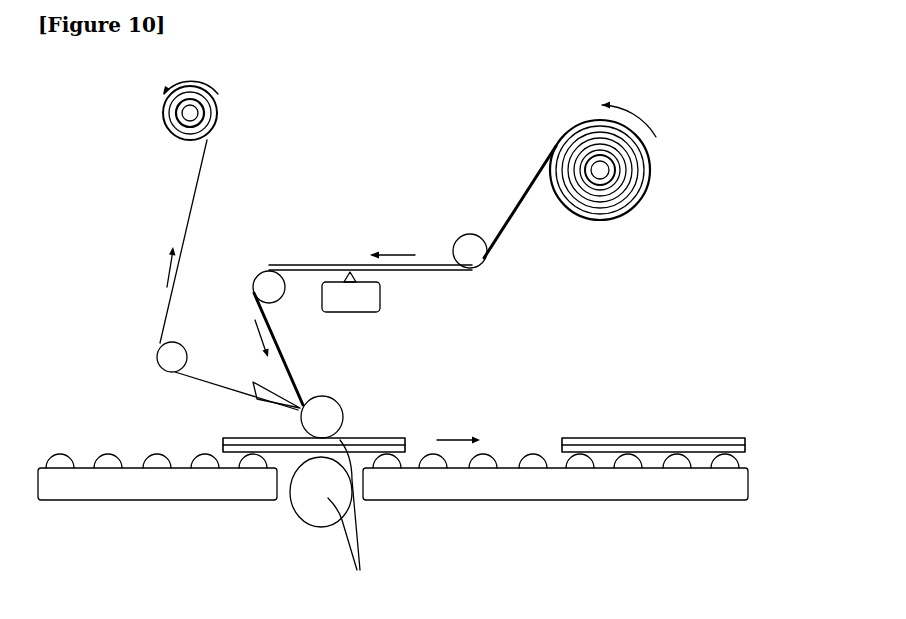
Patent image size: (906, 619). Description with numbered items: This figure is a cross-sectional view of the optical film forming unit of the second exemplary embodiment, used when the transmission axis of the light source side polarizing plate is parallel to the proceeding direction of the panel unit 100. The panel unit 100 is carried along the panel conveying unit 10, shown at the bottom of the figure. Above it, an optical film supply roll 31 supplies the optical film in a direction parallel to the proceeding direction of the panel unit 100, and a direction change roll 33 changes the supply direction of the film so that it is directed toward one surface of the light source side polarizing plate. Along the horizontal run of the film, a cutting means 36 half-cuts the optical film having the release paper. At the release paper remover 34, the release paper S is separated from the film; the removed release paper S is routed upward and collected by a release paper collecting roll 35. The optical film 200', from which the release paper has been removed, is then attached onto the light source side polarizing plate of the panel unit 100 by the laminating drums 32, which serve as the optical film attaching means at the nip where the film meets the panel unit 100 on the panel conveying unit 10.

The panel conveying unit 10 is at (85, 500).
The optical film supply roll 31 is at (650, 168).
The laminating drum 32 is at (352, 521).
The direction change roll 33 is at (470, 232).
The release paper remover 34 is at (250, 381).
The release paper collecting roll 35 is at (218, 112).
The cutting means 36 is at (333, 312).
The panel unit 100 is at (305, 440).
The optical film 200' is at (320, 422).
The release paper S is at (162, 292).